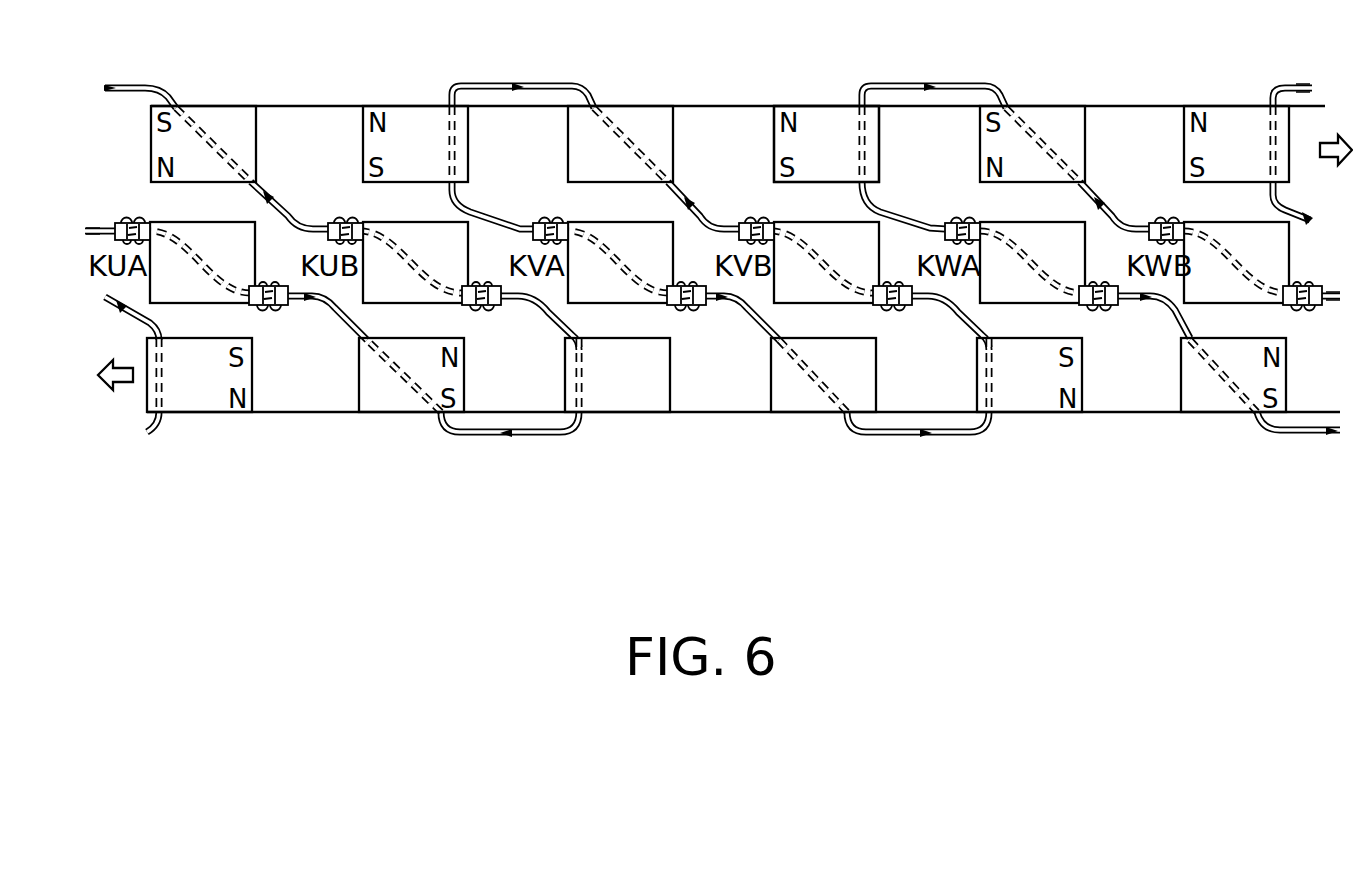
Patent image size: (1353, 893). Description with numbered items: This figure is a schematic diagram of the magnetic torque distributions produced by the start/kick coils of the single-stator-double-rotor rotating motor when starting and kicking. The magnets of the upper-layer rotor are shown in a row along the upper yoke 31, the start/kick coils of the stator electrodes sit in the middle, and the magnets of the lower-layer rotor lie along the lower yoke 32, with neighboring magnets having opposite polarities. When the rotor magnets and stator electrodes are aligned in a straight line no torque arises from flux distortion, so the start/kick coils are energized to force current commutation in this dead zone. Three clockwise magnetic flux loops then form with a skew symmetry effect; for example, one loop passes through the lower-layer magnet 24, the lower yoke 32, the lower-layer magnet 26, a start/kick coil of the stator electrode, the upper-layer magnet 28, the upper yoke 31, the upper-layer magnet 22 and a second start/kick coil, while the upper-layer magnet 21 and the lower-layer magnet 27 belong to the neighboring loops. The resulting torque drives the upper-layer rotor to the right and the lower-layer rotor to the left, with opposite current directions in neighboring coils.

The magnet of the upper-layer rotor 21 is at (803, 106).
The magnet of the upper-layer rotor 22 is at (634, 102).
The magnet of the lower-layer rotor 24 is at (1028, 416).
The magnet of the lower-layer rotor 26 is at (810, 424).
The magnet of the lower-layer rotor 27 is at (620, 420).
The magnet of the upper-layer rotor 28 is at (408, 90).
The upper yoke 31 is at (527, 74).
The lower yoke 32 is at (930, 440).